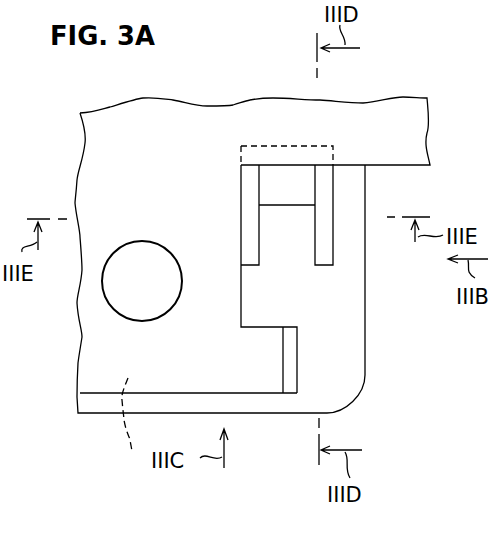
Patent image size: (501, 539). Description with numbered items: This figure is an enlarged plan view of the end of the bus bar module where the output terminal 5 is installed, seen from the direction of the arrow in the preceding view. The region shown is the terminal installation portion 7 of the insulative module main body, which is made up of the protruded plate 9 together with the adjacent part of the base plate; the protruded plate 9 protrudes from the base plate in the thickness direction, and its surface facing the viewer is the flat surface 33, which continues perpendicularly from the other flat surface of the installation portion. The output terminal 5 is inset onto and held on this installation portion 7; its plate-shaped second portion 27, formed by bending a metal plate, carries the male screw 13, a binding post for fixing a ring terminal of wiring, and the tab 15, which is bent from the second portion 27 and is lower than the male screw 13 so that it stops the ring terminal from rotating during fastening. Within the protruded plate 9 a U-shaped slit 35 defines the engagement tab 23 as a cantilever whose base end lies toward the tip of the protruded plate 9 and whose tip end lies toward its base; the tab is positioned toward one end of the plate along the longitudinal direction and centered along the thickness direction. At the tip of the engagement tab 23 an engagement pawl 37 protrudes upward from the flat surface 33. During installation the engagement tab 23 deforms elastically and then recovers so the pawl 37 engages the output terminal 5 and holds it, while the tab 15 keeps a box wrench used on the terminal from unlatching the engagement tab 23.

The output terminal 5 is at (97, 362).
The terminal installation portion 7 is at (92, 400).
The protruded plate 9 is at (347, 353).
The male screw 13 is at (127, 300).
The tab 15 is at (298, 373).
The engagement tab 23 is at (287, 240).
The second portion 27 is at (252, 373).
The flat surface 33 is at (128, 431).
The U-shaped slit 35 is at (325, 204).
The engagement pawl 37 is at (295, 182).